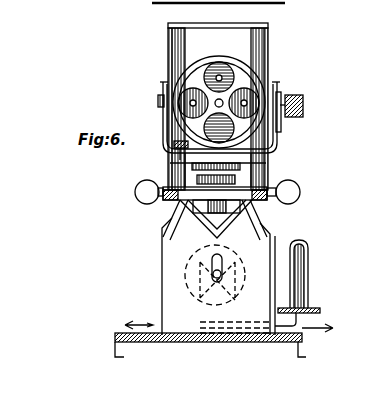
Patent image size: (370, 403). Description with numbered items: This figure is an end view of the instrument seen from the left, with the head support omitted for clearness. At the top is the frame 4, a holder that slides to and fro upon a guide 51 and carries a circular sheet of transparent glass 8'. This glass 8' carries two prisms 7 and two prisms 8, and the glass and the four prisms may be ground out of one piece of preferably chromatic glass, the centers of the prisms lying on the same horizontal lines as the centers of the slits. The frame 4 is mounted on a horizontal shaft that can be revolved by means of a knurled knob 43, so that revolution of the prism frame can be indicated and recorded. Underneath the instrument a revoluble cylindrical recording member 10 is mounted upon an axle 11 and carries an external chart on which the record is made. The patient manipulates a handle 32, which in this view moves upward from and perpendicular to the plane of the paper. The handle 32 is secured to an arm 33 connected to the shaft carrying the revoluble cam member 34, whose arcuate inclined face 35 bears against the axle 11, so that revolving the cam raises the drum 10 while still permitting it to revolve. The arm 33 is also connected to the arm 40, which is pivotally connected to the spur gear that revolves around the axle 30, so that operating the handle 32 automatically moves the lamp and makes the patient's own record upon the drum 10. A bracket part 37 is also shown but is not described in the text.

The frame 4 is at (262, 80).
The prisms 7 is at (262, 96).
The prisms 8 is at (263, 67).
The sheet of transparent glass 8' is at (168, 92).
The revoluble cylindrical member 10 is at (246, 342).
The axle 11 is at (215, 270).
The axle 30 is at (343, 0).
The handle 32 is at (305, 250).
The arm 33 is at (312, 324).
The revoluble cam member 34 is at (212, 306).
The arcuate inclined face 35 is at (207, 274).
The bracket 37 is at (223, 253).
The arm 40 is at (292, 0).
The knurled knob 43 is at (292, 117).
The guide 51 is at (180, 210).